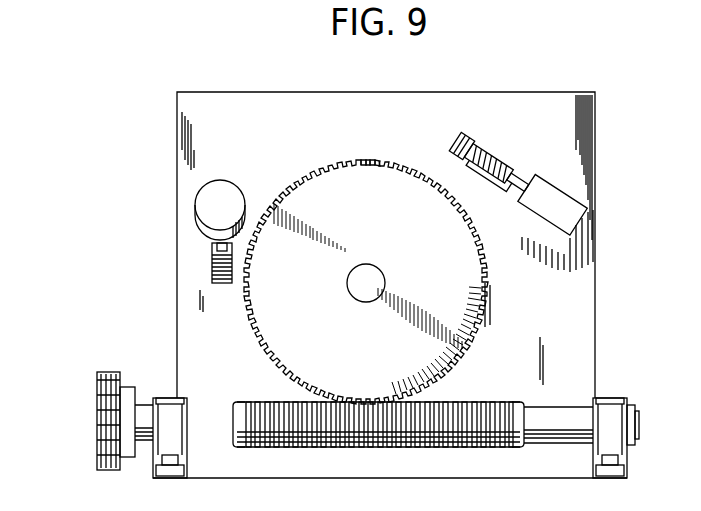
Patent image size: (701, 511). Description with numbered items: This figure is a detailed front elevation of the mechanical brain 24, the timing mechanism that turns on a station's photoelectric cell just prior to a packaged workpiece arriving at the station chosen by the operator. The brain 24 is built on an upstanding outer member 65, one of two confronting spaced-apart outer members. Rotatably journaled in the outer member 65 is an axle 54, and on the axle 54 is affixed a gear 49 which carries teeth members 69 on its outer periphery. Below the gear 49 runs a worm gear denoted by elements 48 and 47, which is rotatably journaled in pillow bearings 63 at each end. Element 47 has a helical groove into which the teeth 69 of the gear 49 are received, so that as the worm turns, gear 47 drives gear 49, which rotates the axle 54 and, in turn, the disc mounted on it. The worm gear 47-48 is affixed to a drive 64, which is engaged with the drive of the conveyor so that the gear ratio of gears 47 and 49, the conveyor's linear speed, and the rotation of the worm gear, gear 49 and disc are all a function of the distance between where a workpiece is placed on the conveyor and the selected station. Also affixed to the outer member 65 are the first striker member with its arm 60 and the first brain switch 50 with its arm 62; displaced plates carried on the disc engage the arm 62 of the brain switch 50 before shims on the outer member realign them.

The mechanical brain 24 is at (115, 229).
The worm gear element 47 is at (436, 448).
The worm gear element 48 is at (556, 407).
The gear 49 is at (423, 291).
The first brain switch 50 is at (555, 223).
The axle 54 is at (373, 266).
The arm of first striker member 60 is at (212, 252).
The arm of first brain switch 62 is at (498, 162).
The pillow bearings 63 is at (645, 462).
The drive 64 is at (99, 372).
The outer member 65 is at (519, 317).
The teeth members 69 is at (383, 162).